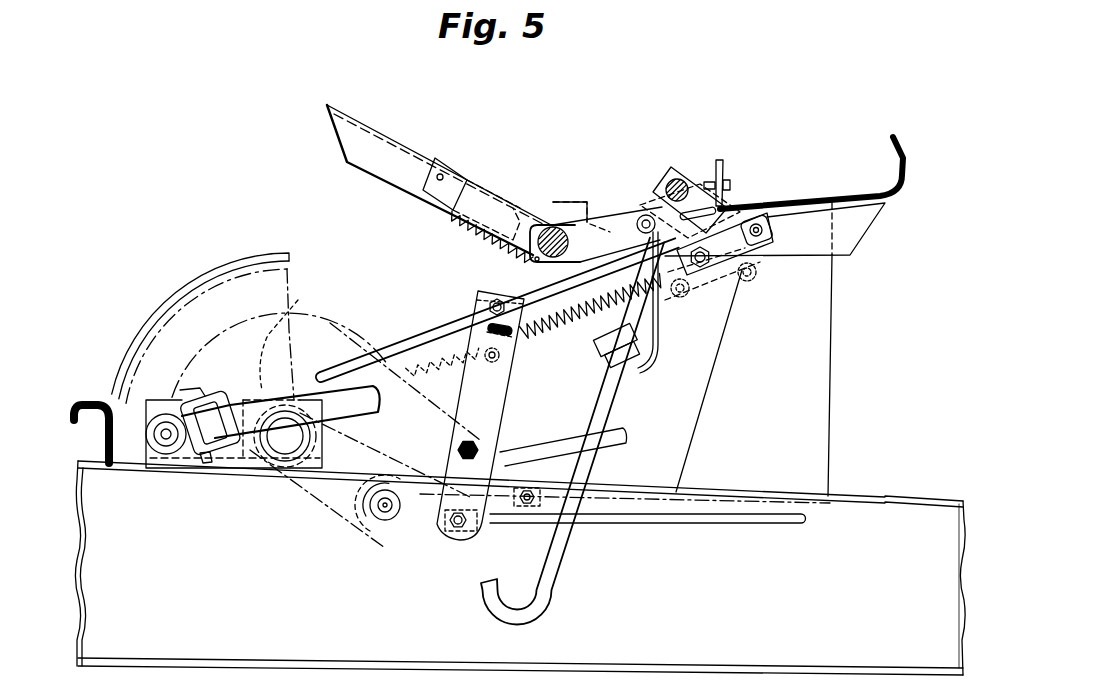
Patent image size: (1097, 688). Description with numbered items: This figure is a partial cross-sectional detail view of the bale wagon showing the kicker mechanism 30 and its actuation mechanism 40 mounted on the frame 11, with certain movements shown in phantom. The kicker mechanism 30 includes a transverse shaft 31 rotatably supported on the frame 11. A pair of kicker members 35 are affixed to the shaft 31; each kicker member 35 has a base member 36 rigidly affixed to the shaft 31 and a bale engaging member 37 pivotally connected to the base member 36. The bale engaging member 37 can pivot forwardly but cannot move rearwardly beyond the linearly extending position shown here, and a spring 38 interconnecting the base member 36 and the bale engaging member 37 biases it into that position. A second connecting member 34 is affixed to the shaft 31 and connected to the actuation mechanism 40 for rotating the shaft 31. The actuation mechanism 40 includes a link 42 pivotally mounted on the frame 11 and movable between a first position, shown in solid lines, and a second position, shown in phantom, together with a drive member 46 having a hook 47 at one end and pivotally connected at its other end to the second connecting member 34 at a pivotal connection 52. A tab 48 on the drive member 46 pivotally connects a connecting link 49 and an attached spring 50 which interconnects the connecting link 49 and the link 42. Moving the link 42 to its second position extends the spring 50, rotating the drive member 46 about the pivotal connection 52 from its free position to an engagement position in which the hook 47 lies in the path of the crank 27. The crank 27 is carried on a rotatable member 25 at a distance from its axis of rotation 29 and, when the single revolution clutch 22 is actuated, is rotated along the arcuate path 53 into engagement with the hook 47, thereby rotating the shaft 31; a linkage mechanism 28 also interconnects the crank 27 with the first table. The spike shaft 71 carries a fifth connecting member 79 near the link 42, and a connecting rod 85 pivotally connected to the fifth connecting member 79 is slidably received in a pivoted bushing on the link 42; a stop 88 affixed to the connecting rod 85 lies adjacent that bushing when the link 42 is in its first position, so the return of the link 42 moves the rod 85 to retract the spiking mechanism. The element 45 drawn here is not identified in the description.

The frame 11 is at (827, 494).
The single revolution clutch 22 is at (228, 264).
The rotatable member 25 is at (180, 470).
The crank 27 is at (166, 448).
The linkage mechanism 28 is at (303, 342).
The axis of rotation 29 is at (282, 466).
The kicker mechanism 30 is at (592, 150).
The transverse shaft 31 is at (552, 226).
The second connecting member 34 is at (605, 202).
The kicker member 35 is at (436, 157).
The base member 36 is at (459, 172).
The bale engaging member 37 is at (352, 170).
The spring 38 is at (483, 230).
The actuation mechanism 40 is at (362, 580).
The link 42 is at (507, 420).
The rod 45 is at (680, 526).
The drive member 46 is at (628, 370).
The hook 47 is at (531, 624).
The tab 48 is at (777, 220).
The connecting link 49 is at (771, 260).
The spring 50 is at (661, 357).
The pivotal connection 52 is at (650, 214).
The arcuate path 53 is at (240, 330).
The spike shaft 71 is at (684, 176).
The fifth connecting member 79 is at (724, 182).
The connecting rod 85 is at (442, 340).
The stop 88 is at (500, 297).